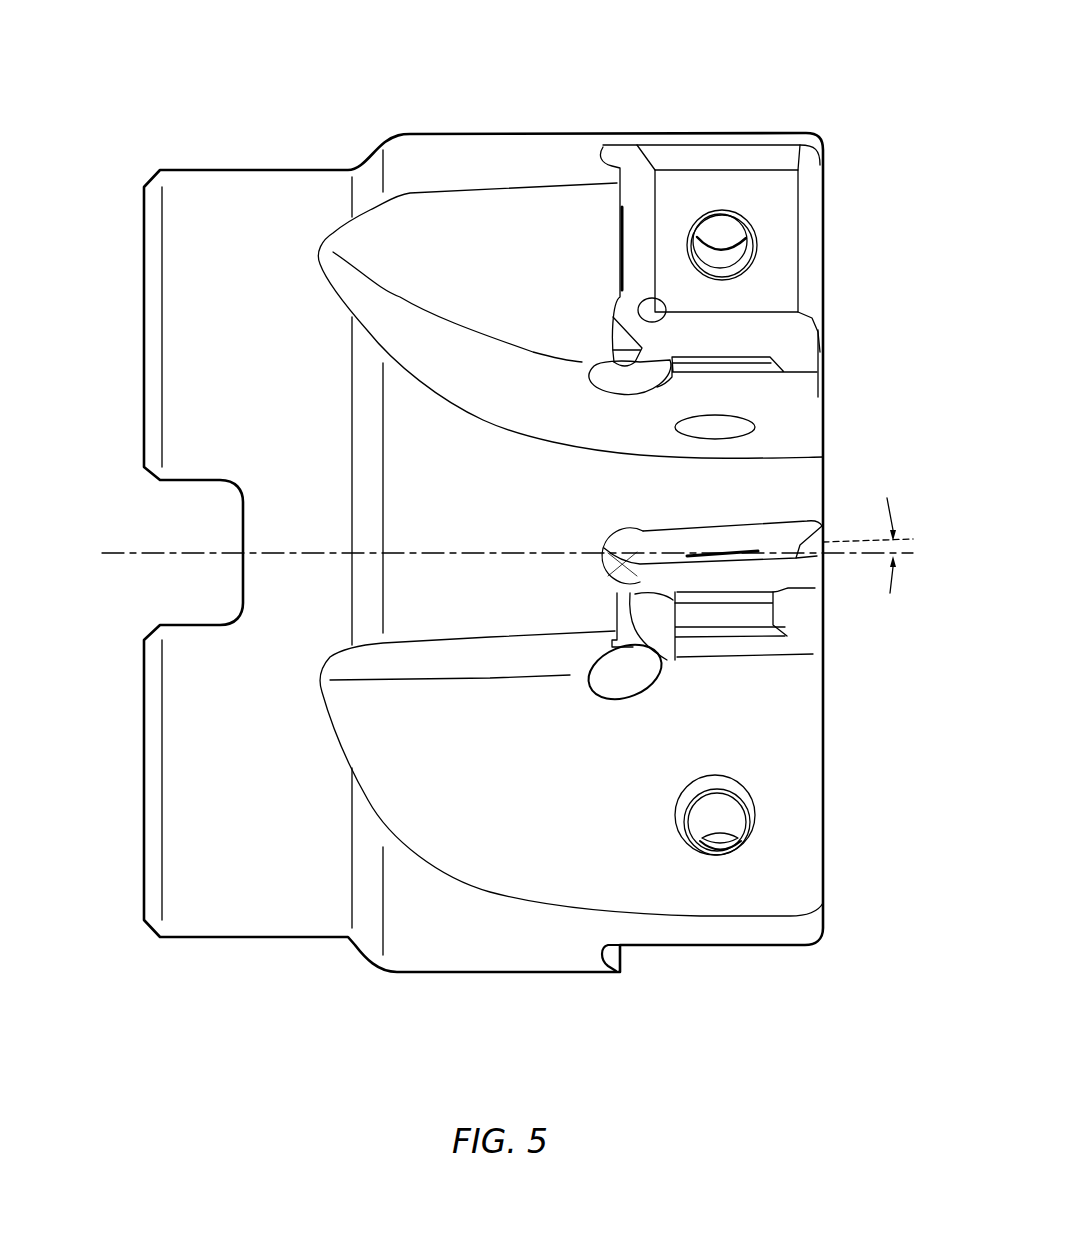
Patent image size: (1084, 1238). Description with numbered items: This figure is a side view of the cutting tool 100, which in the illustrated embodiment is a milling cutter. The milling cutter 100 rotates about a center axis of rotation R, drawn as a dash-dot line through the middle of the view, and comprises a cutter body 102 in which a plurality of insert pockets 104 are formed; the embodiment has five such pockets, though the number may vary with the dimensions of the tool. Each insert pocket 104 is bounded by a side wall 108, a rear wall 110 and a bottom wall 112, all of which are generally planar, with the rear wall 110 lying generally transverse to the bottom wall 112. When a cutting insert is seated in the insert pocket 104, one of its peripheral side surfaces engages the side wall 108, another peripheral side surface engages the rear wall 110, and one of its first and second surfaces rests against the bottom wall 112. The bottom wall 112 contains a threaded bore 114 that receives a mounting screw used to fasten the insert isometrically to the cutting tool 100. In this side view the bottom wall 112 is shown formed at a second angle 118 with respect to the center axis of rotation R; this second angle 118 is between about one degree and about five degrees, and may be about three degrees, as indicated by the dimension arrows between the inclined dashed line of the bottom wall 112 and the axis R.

The cutting tool 100 is at (856, 53).
The cutter body 102 is at (457, 125).
The insert pocket 104 is at (843, 213).
The side wall 108 is at (653, 293).
The rear wall 110 is at (745, 357).
The bottom wall 112 is at (678, 195).
The threaded bore 114 is at (727, 222).
The second angle 118 is at (888, 595).
The center axis of rotation R is at (117, 552).